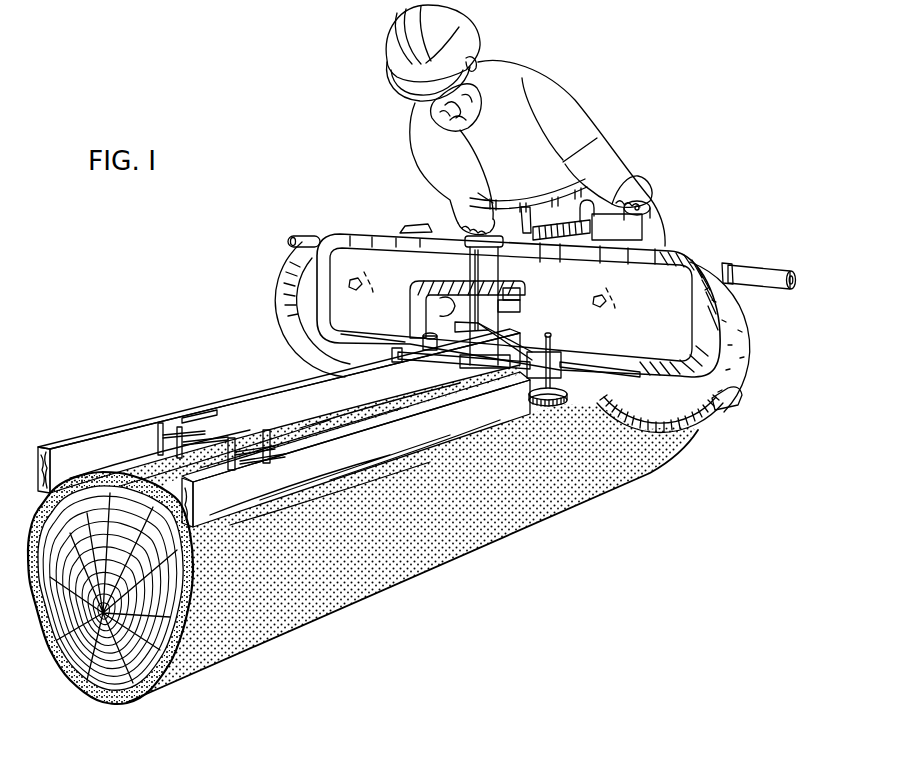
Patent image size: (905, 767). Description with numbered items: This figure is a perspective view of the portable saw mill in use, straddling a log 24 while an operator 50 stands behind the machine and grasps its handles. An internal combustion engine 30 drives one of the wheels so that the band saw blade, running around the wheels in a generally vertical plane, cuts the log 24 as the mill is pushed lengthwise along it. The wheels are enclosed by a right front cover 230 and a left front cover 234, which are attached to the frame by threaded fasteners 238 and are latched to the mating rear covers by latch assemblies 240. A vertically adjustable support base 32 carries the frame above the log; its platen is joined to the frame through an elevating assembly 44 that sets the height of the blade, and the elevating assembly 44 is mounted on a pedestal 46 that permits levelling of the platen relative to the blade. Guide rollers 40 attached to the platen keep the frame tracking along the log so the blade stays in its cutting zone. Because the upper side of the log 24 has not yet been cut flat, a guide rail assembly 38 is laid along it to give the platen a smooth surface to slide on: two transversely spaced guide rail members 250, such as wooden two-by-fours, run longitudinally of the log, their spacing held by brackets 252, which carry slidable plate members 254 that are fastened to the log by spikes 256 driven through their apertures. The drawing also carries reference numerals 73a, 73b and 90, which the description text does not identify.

The log 24 is at (408, 575).
The internal combustion engine 30 is at (676, 176).
The vertically adjustable support base 32 is at (470, 296).
The guide rail assembly 38 is at (284, 428).
The guide rollers 40 is at (560, 403).
The elevating assembly 44 is at (467, 338).
The pedestal 46 is at (438, 350).
The operator 50 is at (562, 98).
The handle 73a is at (307, 235).
The handle 73b is at (780, 249).
The blade guide 90 is at (410, 322).
The right front cover 230 is at (298, 283).
The left front cover 234 is at (627, 415).
The threaded fasteners 238 is at (352, 283).
The latch assemblies 240 is at (442, 207).
The guide rail members 250 is at (100, 434).
The brackets 252 is at (182, 410).
The plate members 254 is at (236, 452).
The spikes 256 is at (251, 438).